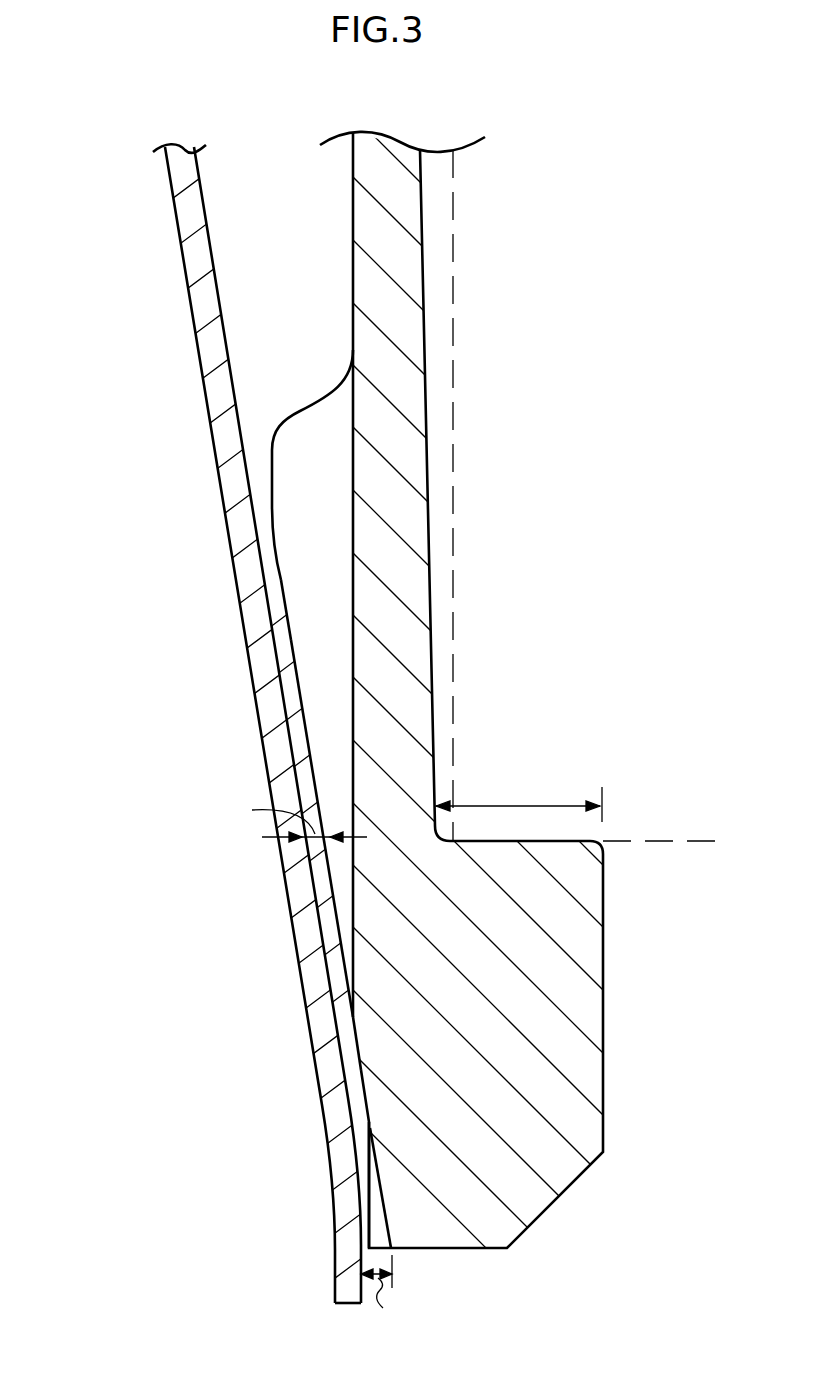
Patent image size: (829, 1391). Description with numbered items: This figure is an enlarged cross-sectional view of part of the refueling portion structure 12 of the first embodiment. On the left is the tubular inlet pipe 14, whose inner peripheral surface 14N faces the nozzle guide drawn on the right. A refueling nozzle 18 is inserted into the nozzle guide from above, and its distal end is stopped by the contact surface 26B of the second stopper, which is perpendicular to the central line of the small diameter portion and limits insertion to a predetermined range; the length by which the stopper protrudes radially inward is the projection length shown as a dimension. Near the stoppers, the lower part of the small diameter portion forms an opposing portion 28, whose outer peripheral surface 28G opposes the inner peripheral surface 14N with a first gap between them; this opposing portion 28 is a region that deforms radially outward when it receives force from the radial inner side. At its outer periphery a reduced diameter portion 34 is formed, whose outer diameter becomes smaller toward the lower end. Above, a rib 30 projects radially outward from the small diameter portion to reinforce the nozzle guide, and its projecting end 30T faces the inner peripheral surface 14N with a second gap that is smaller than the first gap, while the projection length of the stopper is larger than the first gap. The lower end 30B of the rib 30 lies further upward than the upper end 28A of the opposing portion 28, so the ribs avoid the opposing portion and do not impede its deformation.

The refueling portion structure 12 is at (97, 276).
The inlet pipe 14 is at (205, 397).
The inner peripheral surface of the inlet pipe 14N is at (218, 302).
The refueling nozzle 18 is at (450, 172).
The contact surface of the second stopper 26B is at (555, 841).
The opposing portion 28 is at (377, 1085).
The upper end of the opposing portion 28A is at (367, 1124).
The outer peripheral surface of the opposing portion 28G is at (385, 1193).
The rib 30 is at (315, 677).
The projecting end of the rib 30T is at (286, 620).
The lower end of the rib 30B is at (355, 1020).
The reduced diameter portion 34 is at (387, 1227).